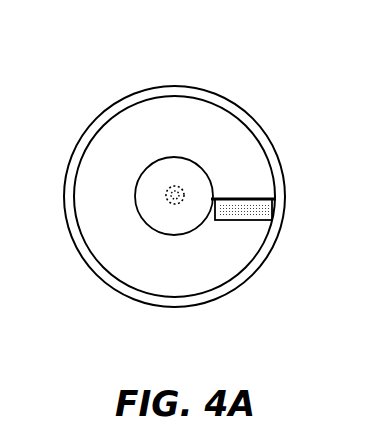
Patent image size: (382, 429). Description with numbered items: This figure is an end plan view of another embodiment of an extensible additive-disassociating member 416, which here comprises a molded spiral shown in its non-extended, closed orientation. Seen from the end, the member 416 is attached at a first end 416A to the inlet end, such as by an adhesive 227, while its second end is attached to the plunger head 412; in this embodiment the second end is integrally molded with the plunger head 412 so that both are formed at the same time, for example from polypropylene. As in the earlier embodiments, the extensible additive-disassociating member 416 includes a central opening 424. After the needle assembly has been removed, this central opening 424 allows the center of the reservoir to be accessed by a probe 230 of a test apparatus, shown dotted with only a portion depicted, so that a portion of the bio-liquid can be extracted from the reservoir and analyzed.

The extensible additive-disassociating member 416 is at (143, 90).
The plunger head 412 is at (243, 111).
The central opening 424 is at (140, 180).
The probe 230 is at (166, 203).
The adhesive 227 is at (240, 220).
The first end 416A is at (275, 213).